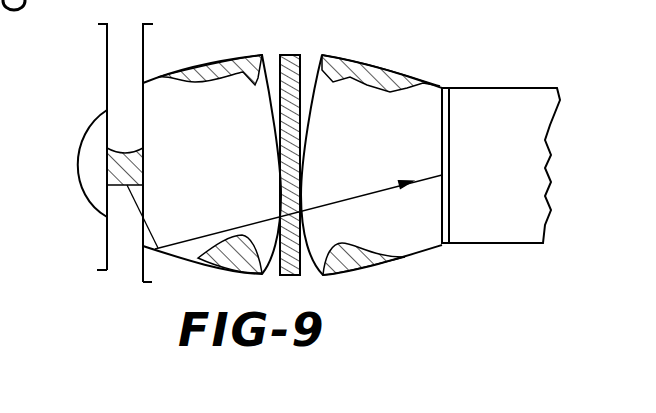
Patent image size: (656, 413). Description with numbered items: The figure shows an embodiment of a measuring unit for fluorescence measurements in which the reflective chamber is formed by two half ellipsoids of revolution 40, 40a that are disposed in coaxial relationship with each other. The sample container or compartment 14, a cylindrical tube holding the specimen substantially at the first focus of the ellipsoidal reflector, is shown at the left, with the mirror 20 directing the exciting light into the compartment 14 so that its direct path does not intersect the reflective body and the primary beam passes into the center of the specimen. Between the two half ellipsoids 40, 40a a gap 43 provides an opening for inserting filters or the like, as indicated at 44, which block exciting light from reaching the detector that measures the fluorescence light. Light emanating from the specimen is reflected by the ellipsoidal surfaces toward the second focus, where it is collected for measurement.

The mirror 20 is at (107, 72).
The sample container or compartment 14 is at (143, 161).
The half ellipsoid of revolution 40 is at (215, 63).
The gap 43 is at (294, 55).
The half ellipsoid of revolution 40a is at (372, 64).
The filters 44 is at (279, 183).